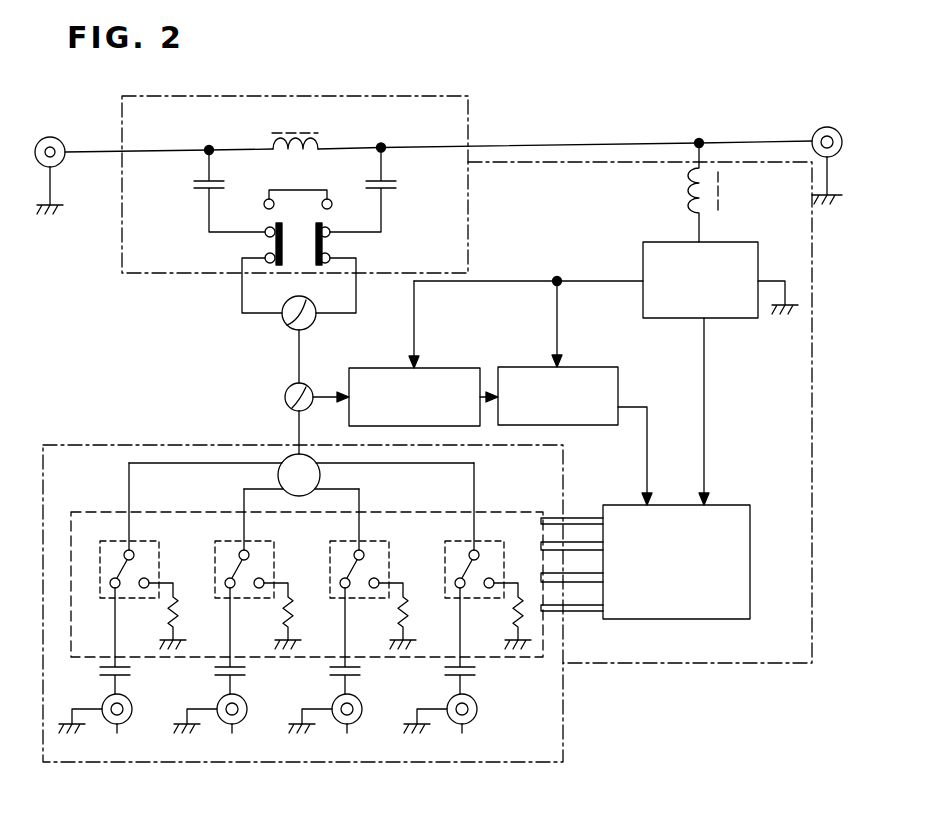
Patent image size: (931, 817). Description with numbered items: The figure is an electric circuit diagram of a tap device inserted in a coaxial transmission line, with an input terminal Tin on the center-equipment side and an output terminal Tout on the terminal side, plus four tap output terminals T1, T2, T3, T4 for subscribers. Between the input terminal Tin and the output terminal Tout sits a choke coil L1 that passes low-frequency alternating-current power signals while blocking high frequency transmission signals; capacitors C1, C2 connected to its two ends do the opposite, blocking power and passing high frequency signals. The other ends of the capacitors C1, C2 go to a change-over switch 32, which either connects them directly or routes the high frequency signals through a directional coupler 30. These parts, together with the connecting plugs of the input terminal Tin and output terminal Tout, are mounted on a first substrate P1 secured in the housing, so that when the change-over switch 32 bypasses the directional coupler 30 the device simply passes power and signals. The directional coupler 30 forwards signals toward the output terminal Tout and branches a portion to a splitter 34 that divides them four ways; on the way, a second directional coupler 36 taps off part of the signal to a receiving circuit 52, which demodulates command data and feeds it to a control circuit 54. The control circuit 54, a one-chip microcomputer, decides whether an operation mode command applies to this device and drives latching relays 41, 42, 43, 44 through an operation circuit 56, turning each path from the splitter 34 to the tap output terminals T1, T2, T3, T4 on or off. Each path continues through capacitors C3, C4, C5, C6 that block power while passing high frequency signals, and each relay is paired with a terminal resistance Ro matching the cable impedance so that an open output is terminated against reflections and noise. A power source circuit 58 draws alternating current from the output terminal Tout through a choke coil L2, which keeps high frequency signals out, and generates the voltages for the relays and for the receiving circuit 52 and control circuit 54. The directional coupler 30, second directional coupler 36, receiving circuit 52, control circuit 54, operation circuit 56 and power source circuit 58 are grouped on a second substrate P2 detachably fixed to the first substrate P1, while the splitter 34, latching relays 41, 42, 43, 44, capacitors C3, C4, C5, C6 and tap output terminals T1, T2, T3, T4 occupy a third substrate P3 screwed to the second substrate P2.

The input terminal Tin is at (48, 137).
The output terminal Tout is at (815, 128).
The first substrate P1 is at (468, 113).
The second substrate P2 is at (720, 663).
The third substrate P3 is at (565, 722).
The choke coil L1 is at (293, 133).
The choke coil L2 is at (721, 192).
The capacitor C1 is at (197, 186).
The capacitor C2 is at (397, 186).
The capacitor C3 is at (133, 671).
The capacitor C4 is at (248, 671).
The capacitor C5 is at (363, 671).
The capacitor C6 is at (478, 671).
The directional coupler 30 is at (290, 318).
The change-over switch 32 is at (326, 244).
The splitter 34 is at (320, 476).
The second directional coupler 36 is at (285, 397).
The latching relay 41 is at (134, 541).
The latching relay 42 is at (249, 541).
The latching relay 43 is at (364, 541).
The latching relay 44 is at (479, 541).
The receiving circuit 52 is at (371, 368).
The control circuit 54 is at (522, 367).
The operation circuit 56 is at (752, 548).
The power source circuit 58 is at (659, 250).
The terminal resistance Ro is at (169, 607).
The tap output terminal T1 is at (96, 728).
The tap output terminal T2 is at (211, 728).
The tap output terminal T3 is at (326, 728).
The tap output terminal T4 is at (441, 728).